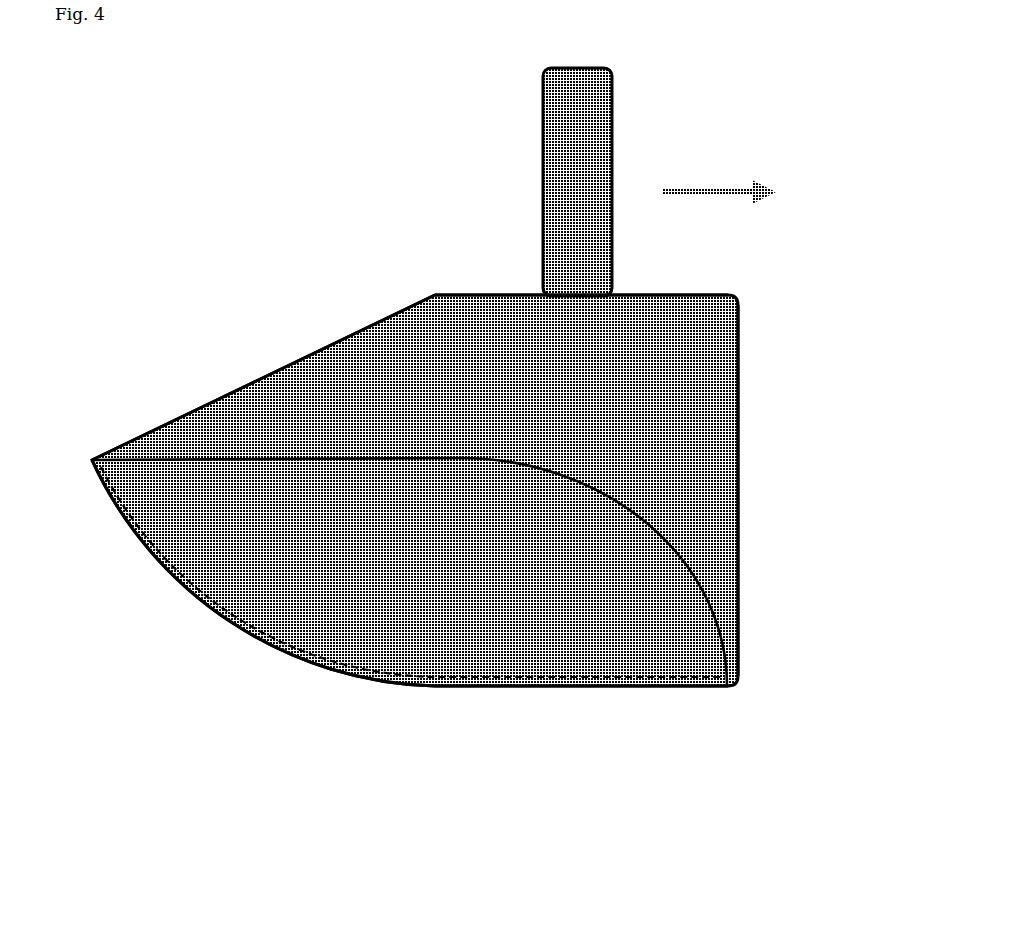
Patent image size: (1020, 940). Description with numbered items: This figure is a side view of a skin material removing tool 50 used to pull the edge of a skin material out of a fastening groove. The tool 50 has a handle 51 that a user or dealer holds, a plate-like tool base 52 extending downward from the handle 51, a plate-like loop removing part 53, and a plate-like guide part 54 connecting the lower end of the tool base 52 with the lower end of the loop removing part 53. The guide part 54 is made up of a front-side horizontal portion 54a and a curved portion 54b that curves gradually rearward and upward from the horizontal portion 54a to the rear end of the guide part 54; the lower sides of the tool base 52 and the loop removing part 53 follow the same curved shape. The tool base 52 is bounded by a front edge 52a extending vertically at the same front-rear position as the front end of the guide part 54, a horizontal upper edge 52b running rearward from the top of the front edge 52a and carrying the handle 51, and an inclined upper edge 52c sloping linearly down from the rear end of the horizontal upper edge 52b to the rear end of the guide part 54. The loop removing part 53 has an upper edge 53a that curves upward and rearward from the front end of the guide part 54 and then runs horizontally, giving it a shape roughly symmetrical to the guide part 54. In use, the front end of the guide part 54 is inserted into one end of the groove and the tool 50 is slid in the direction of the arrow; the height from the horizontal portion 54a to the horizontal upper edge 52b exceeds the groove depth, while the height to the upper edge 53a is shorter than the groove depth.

The skin material removing tool 50 is at (327, 226).
The handle 51 is at (613, 136).
The tool base 52 is at (688, 372).
The front edge 52a is at (740, 489).
The horizontal upper edge 52b is at (666, 292).
The inclined upper edge 52c is at (277, 368).
The loop removing part 53 is at (615, 600).
The upper edge 53a is at (466, 457).
The guide part 54 is at (417, 688).
The horizontal portion 54a is at (605, 689).
The curved portion 54b is at (203, 605).